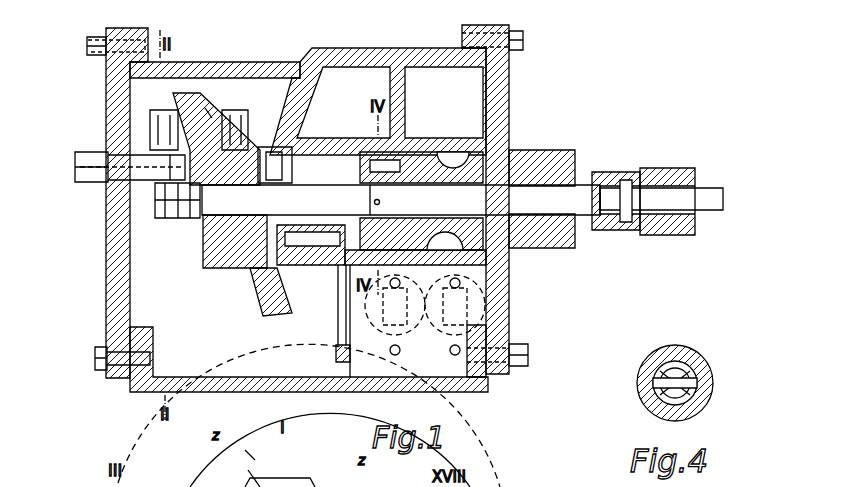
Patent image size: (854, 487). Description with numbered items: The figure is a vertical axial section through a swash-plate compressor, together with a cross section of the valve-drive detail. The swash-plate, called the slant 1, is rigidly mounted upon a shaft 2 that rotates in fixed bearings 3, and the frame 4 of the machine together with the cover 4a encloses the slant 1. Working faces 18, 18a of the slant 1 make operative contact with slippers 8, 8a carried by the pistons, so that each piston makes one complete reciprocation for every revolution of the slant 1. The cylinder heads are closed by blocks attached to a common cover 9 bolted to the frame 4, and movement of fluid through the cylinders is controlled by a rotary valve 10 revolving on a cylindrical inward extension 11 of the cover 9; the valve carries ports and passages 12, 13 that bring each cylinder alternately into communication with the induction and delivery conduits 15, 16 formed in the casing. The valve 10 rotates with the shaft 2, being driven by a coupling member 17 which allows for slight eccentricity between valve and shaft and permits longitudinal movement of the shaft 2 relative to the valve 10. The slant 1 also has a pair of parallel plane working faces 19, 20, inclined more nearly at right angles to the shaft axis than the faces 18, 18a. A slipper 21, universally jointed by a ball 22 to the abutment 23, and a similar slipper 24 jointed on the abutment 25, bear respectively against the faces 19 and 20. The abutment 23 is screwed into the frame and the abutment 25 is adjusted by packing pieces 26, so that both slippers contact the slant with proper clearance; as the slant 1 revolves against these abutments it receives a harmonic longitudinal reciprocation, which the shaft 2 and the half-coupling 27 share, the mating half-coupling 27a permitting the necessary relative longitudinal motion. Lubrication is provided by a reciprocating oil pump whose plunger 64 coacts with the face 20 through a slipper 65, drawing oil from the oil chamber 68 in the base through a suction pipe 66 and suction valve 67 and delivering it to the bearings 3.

In FIG. 1, the slant 1 is at (272, 300).
In FIG. 1, the shaft 2 is at (401, 200).
In FIG. 4, the shaft 2 is at (697, 400).
In FIG. 1, the fixed bearings 3 is at (300, 185).
In FIG. 1, the frame 4 is at (262, 63).
In FIG. 1, the cover 4a is at (104, 112).
In FIG. 1, the slipper 8 is at (176, 120).
In FIG. 1, the slipper 8a is at (207, 110).
In FIG. 1, the cover 9 is at (511, 285).
In FIG. 1, the rotary valve 10 is at (444, 152).
In FIG. 4, the rotary valve 10 is at (702, 363).
In FIG. 1, the cylindrical inward extension 11 is at (458, 183).
In FIG. 1, the ports and passages 12 is at (417, 152).
In FIG. 1, the ports and passages 13 is at (460, 158).
In FIG. 1, the induction conduit 15 is at (395, 315).
In FIG. 1, the delivery conduit 16 is at (455, 315).
In FIG. 1, the coupling member 17 is at (392, 185).
In FIG. 4, the coupling member 17 is at (655, 396).
In FIG. 1, the working face 18 is at (223, 106).
In FIG. 1, the working face 18a is at (303, 303).
In FIG. 1, the working face 19 is at (213, 201).
In FIG. 1, the working face 20 is at (245, 185).
In FIG. 1, the slipper 21 is at (178, 218).
In FIG. 1, the ball 22 is at (158, 208).
In FIG. 1, the abutment 23 is at (172, 166).
In FIG. 1, the slipper 24 is at (265, 148).
In FIG. 1, the abutment 25 is at (312, 134).
In FIG. 1, the packing pieces 26 is at (305, 146).
In FIG. 1, the half-coupling 27 is at (612, 172).
In FIG. 1, the half-coupling 27a is at (672, 170).
In FIG. 1, the plunger 64 is at (322, 245).
In FIG. 1, the slipper 65 is at (258, 272).
In FIG. 1, the suction pipe 66 is at (340, 308).
In FIG. 1, the suction valve 67 is at (352, 357).
In FIG. 1, the oil chamber 68 is at (423, 359).